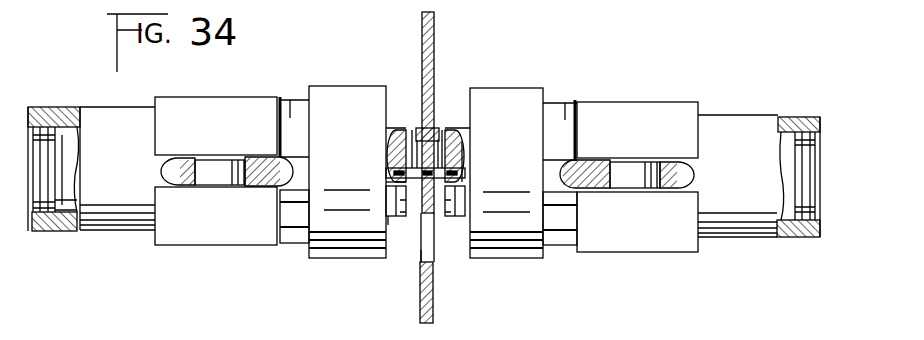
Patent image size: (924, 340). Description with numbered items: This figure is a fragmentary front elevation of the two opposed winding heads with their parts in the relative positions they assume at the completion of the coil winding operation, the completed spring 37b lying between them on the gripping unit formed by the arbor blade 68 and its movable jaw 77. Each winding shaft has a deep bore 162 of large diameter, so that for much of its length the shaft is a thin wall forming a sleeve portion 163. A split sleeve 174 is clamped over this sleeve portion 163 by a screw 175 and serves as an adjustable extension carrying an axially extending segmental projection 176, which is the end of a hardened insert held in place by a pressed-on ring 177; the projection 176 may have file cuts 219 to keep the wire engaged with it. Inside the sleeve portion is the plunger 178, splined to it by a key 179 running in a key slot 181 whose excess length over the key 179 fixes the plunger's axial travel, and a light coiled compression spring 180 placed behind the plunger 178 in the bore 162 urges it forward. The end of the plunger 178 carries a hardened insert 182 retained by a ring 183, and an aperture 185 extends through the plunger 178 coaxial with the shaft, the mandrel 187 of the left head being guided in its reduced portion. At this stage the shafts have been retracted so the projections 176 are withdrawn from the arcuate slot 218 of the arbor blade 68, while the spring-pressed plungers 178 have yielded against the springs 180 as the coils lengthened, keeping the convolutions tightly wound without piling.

The bore 162 is at (42, 233).
The coiled compression spring 180 is at (57, 107).
The plunger 178 is at (62, 232).
The sleeve portion 163 is at (125, 232).
The split sleeve 174 is at (290, 100).
The key slot 181 is at (160, 166).
The screw 175 is at (220, 182).
The key 179 is at (258, 158).
The pressed-on ring 177 is at (338, 85).
The movable jaw 77 is at (435, 42).
The arbor blade 68 is at (434, 306).
The completed spring 37b is at (437, 128).
The retaining ring 183 is at (395, 130).
The hardened insert 182 is at (413, 130).
The mandrel 187 is at (388, 165).
The aperture 185 is at (466, 173).
The projection 176 is at (397, 217).
The file cuts 219 is at (390, 225).
The arcuate slot 218 is at (428, 253).